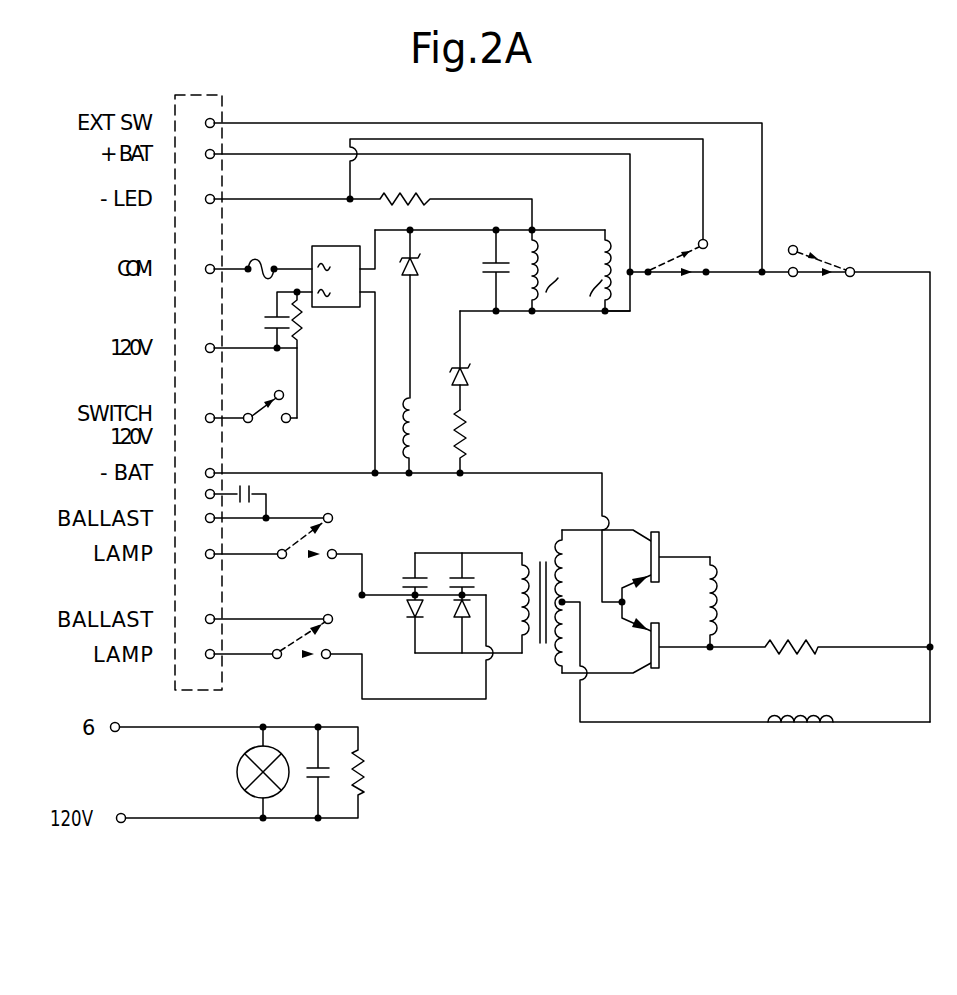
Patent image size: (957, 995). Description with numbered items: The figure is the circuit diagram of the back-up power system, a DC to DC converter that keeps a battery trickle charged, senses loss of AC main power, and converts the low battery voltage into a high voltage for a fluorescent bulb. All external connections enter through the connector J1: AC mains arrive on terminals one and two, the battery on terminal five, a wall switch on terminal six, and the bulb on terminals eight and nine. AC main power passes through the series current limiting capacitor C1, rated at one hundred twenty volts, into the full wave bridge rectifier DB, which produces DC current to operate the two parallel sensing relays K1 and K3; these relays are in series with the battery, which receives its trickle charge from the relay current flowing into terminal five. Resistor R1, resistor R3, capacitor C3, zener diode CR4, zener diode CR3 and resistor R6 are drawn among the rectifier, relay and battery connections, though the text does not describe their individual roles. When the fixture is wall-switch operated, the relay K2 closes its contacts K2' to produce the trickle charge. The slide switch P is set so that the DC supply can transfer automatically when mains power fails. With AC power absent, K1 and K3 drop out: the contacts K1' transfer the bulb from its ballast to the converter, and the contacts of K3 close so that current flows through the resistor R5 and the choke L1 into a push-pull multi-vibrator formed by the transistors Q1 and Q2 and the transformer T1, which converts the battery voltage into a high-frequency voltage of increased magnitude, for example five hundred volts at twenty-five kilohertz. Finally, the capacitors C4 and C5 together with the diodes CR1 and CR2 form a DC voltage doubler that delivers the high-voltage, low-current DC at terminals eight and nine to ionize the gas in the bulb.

The connector J1 is at (198, 376).
The full wave bridge rectifier DB is at (336, 347).
The resistor R3 is at (441, 201).
The zener diode CR4 is at (447, 262).
The capacitor C3 is at (482, 284).
The sensing relay K1 is at (547, 286).
The sensing relay K3 is at (836, 284).
The slide switch P is at (673, 258).
The series current limiting capacitor C1 is at (266, 317).
The resistor R1 is at (312, 355).
The contacts K2' is at (271, 421).
The relay K2 is at (422, 428).
The zener diode CR3 is at (509, 360).
The resistor R6 is at (476, 441).
The capacitor C4 is at (410, 570).
The capacitor C5 is at (456, 570).
The diode CR1 is at (406, 605).
The diode CR2 is at (452, 607).
The transformer T1 is at (620, 600).
The transistor Q1 is at (665, 546).
The transistor Q2 is at (665, 662).
The resistor R5 is at (820, 634).
The choke L1 is at (800, 706).
The contacts K1' is at (305, 575).